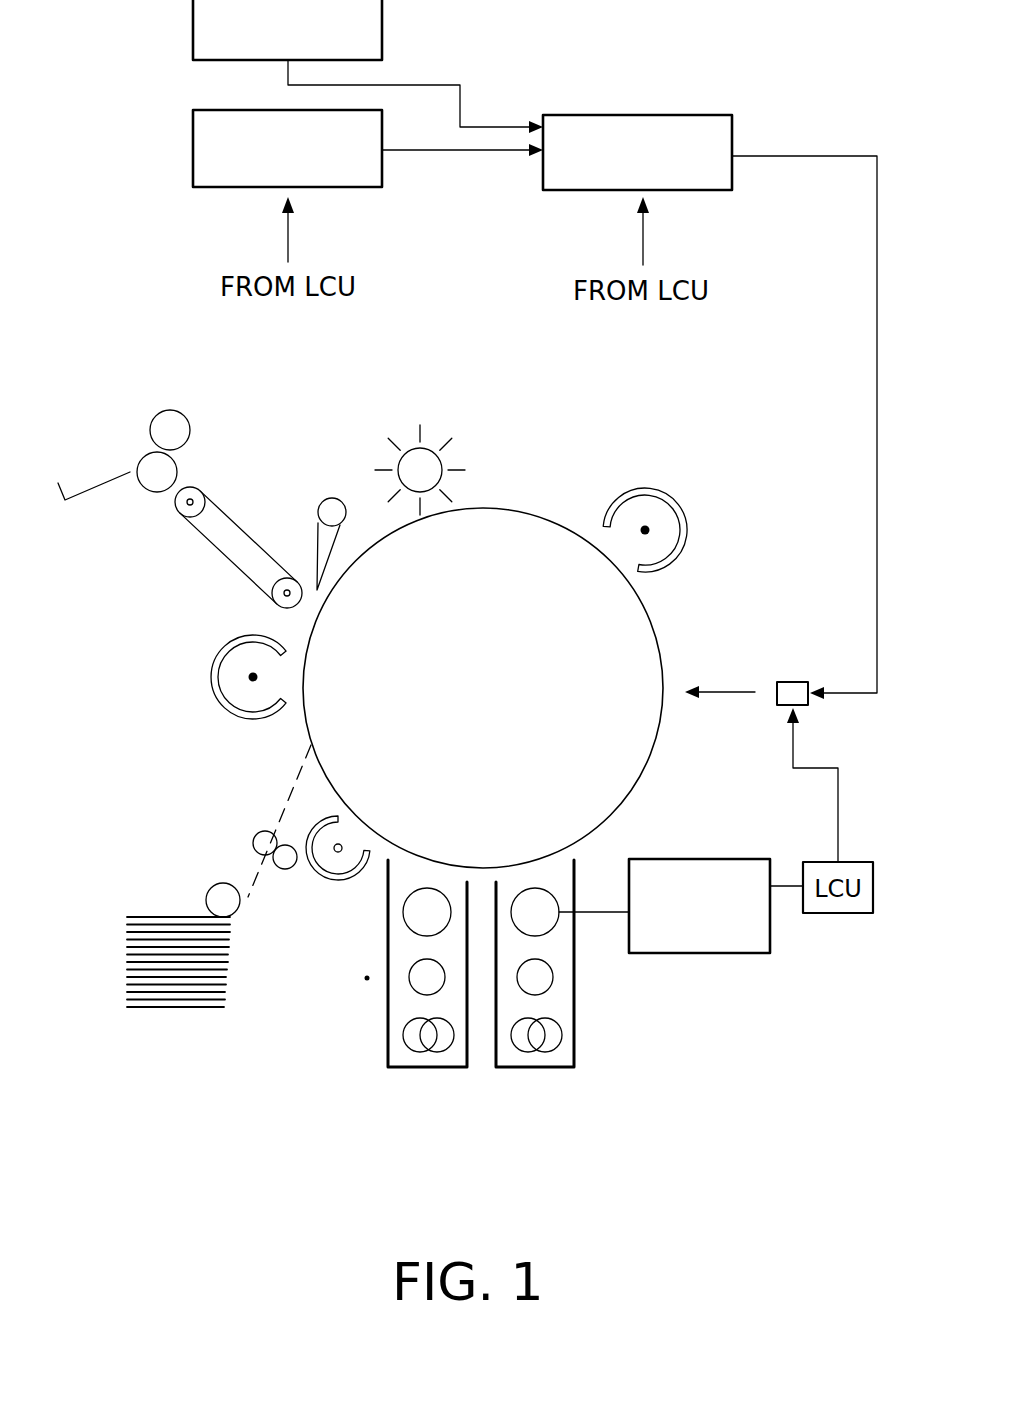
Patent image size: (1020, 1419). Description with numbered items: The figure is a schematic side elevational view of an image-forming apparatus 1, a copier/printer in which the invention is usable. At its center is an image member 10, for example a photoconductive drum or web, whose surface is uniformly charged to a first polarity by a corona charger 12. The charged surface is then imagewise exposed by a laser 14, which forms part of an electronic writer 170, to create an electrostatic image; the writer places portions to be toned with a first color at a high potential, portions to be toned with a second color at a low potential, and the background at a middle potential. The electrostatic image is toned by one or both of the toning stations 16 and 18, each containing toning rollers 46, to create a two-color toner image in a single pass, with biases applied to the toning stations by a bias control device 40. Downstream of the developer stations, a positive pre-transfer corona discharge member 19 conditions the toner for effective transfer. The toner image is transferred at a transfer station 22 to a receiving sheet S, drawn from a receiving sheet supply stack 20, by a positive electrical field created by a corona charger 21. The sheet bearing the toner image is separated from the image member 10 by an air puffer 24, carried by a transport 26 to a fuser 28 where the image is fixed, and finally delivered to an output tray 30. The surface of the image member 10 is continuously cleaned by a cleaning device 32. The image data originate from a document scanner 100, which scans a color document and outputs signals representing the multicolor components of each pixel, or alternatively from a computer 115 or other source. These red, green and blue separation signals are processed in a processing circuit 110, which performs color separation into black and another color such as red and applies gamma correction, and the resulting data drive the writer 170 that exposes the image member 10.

The electrostatographic reproduction apparatus 1 is at (552, 448).
The image member 10 is at (641, 776).
The corona charger 12 is at (649, 490).
The laser 14 is at (731, 692).
The toning station 16 is at (535, 1068).
The toning station 18 is at (427, 1068).
The pre-transfer corona discharge member 19 is at (331, 878).
The receiver sheet supply stack 20 is at (173, 995).
The corona charger 21 is at (222, 715).
The transfer station 22 is at (276, 727).
The air puffer 24 is at (327, 502).
The transport 26 is at (226, 560).
The fuser 28 is at (173, 409).
The output tray 30 is at (110, 480).
The cleaning device 32 is at (437, 445).
The bias control device 40 is at (700, 954).
The toning roller 46 is at (404, 933).
The document scanner 100 is at (193, 155).
The processing circuit 110 is at (637, 115).
The computer 115 is at (382, 38).
The writer 170 is at (793, 682).
The receiving sheet S is at (160, 917).